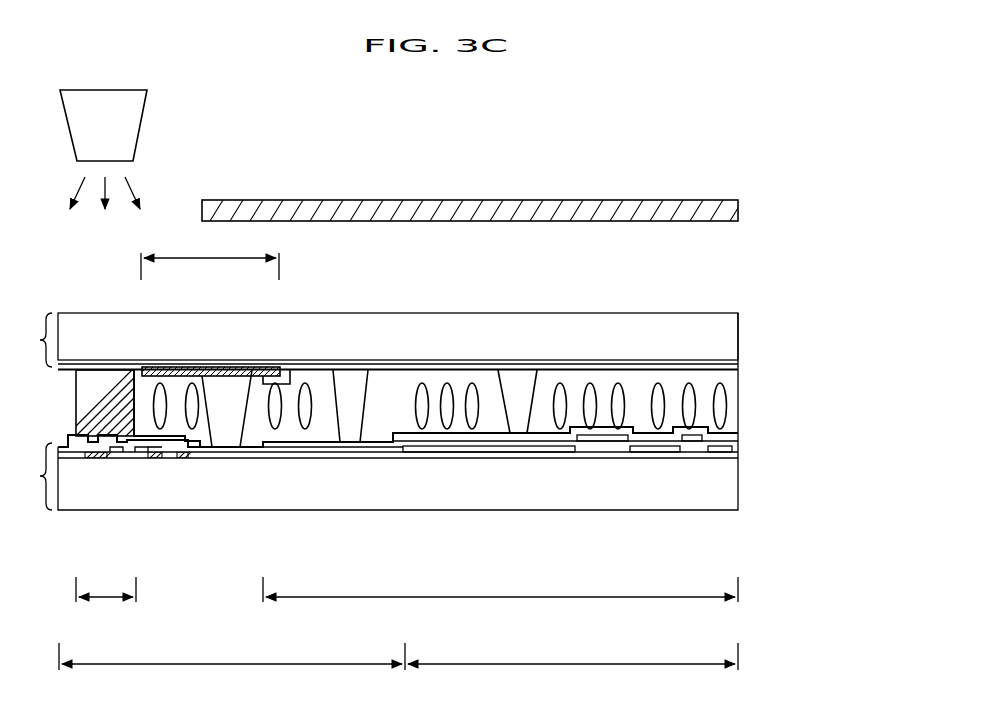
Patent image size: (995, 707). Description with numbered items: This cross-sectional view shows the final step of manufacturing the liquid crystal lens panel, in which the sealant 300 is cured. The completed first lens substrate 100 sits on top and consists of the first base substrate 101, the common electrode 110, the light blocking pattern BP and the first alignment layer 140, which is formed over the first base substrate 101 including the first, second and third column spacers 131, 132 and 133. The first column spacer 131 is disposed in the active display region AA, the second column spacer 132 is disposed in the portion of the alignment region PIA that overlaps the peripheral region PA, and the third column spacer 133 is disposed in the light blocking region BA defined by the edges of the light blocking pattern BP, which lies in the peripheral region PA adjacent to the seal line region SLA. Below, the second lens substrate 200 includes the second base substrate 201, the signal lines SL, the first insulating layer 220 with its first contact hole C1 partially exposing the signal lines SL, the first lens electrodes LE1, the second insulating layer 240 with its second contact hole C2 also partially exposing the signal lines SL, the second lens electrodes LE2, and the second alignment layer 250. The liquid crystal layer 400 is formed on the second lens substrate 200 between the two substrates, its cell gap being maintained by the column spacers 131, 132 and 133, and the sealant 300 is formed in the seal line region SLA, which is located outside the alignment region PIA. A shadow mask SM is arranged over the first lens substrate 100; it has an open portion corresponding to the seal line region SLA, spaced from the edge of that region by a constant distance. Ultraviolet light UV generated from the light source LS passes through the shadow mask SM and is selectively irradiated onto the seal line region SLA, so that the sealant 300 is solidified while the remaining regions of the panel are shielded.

The first lens substrate 100 is at (29, 340).
The first base substrate 101 is at (738, 336).
The common electrode 110 is at (738, 362).
The first alignment layer 140 is at (738, 370).
The liquid crystal layer 400 is at (738, 405).
The sealant 300 is at (96, 385).
The light blocking pattern BP is at (183, 372).
The first column spacer 131 is at (516, 380).
The second column spacer 132 is at (346, 380).
The third column spacer 133 is at (222, 440).
The second lens substrate 200 is at (29, 476).
The second base substrate 201 is at (738, 500).
The first insulating layer 220 is at (738, 457).
The second insulating layer 240 is at (738, 450).
The second alignment layer 250 is at (738, 435).
The first lens electrodes LE1 is at (503, 453).
The second lens electrodes LE2 is at (617, 443).
The signal lines SL is at (146, 458).
The first contact hole C1 is at (165, 455).
The second contact hole C2 is at (72, 458).
The seal line region SLA is at (106, 603).
The alignment region PIA is at (500, 603).
The peripheral region PA is at (232, 669).
The active display region AA is at (573, 669).
The light blocking region BA is at (210, 258).
The light source LS is at (140, 123).
The ultraviolet light UV is at (119, 192).
The shadow mask SM is at (738, 210).